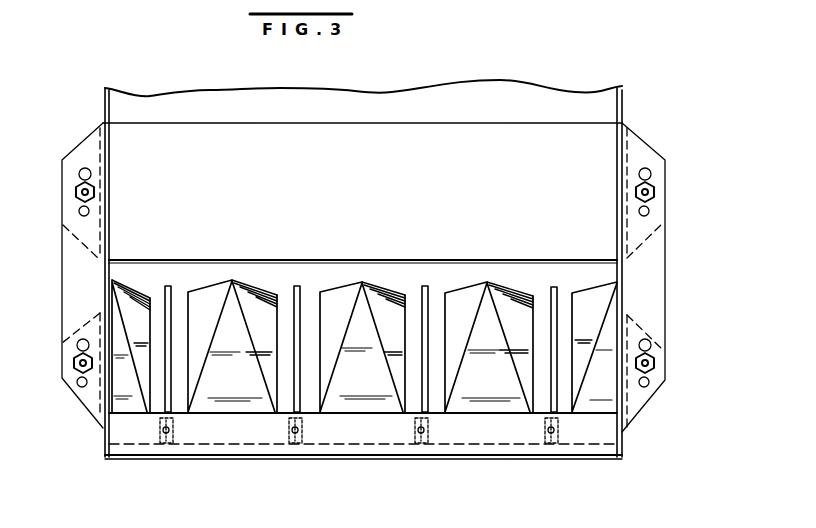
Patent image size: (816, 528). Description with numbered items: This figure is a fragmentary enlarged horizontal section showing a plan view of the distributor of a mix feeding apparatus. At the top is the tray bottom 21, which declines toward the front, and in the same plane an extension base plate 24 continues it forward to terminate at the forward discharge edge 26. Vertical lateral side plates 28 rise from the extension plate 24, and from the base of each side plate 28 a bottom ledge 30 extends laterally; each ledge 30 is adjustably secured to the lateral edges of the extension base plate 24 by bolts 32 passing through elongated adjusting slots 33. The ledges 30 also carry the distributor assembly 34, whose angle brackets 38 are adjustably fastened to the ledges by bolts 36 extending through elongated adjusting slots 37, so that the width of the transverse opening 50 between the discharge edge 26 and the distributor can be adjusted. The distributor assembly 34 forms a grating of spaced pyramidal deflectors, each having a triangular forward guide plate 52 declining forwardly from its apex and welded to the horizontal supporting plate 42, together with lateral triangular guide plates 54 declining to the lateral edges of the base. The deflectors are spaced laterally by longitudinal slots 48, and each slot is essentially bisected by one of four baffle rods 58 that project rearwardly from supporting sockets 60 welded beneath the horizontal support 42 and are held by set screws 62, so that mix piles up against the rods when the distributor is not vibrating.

The bottom of the tray 21 is at (472, 95).
The extension base plate 24 is at (400, 175).
The forward discharge edge 26 is at (302, 262).
The lateral side plates 28 is at (105, 272).
The bottom ledge 30 is at (62, 305).
The bolts 32 is at (78, 192).
The elongated adjusting slots 33 is at (78, 206).
The distributor assembly 34 is at (101, 441).
The bolts 36 is at (75, 360).
The elongated adjusting slots 37 is at (80, 388).
The angle brackets 38 is at (72, 386).
The horizontal supporting plate 42 is at (217, 435).
The longitudinal slots 48 is at (155, 298).
The transverse opening 50 is at (395, 270).
The triangular forward guide plate 52 is at (131, 394).
The lateral triangular guide plates 54 is at (146, 334).
The baffle rods 58 is at (163, 414).
The supporting sockets 60 is at (175, 428).
The set screws 62 is at (175, 440).